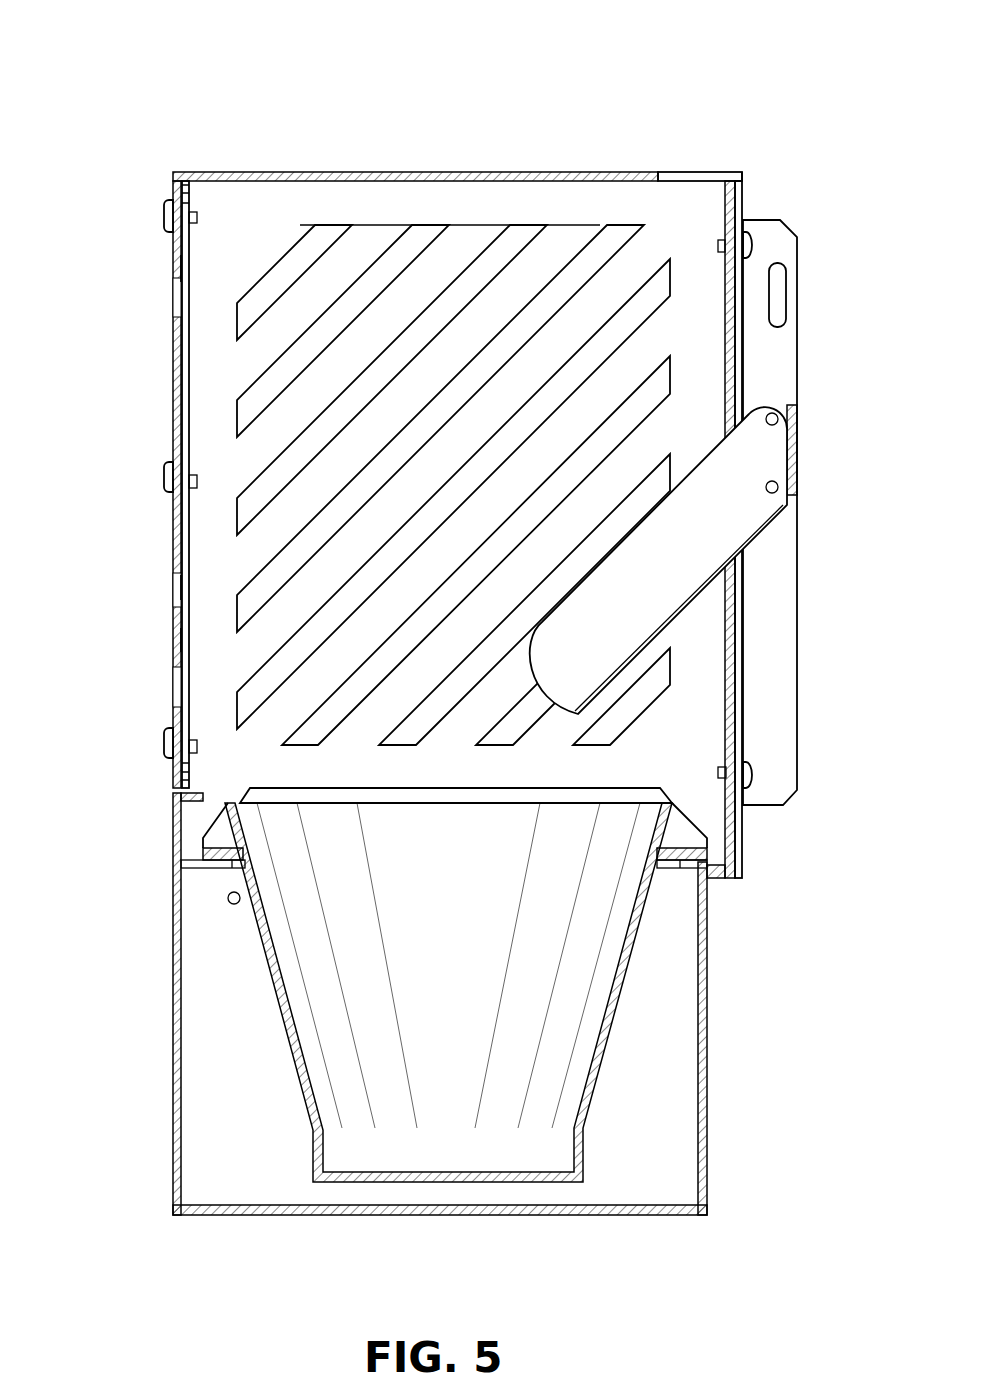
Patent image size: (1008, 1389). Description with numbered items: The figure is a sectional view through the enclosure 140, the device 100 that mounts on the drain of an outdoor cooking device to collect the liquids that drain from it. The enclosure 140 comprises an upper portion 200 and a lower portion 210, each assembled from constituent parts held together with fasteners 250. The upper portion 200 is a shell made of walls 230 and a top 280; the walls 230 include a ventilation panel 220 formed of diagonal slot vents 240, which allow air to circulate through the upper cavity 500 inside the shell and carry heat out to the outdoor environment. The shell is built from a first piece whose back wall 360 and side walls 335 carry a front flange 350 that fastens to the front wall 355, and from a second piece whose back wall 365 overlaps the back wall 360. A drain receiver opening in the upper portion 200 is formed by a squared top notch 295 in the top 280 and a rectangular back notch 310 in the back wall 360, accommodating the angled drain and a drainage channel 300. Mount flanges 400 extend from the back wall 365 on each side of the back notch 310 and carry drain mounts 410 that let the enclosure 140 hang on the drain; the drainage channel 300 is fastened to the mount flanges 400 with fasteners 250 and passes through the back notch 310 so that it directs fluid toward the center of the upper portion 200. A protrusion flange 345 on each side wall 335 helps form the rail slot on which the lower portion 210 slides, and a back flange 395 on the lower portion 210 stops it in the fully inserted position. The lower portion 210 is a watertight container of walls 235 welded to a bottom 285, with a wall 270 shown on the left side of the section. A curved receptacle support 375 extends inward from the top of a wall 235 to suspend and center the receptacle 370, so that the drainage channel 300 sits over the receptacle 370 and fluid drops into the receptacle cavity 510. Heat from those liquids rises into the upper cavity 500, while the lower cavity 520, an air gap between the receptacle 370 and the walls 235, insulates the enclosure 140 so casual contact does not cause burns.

The apparatus 100 is at (127, 36).
The enclosure 140 is at (124, 104).
The upper portion 200 is at (415, 106).
The lower portion 210 is at (281, 1281).
The ventilation panel 220 is at (181, 640).
The walls 230 is at (181, 268).
The walls 235 is at (707, 1025).
The vent 240 is at (181, 588).
The fasteners 250 is at (173, 218).
The lower housing left wall 270 is at (181, 970).
The top 280 is at (345, 172).
The bottom 285 is at (540, 1215).
The top notch 295 is at (712, 172).
The drainage channel 300 is at (766, 543).
The back notch 310 is at (725, 354).
The side walls 335 is at (264, 248).
The protrusion flange 345 is at (203, 852).
The front flange 350 is at (190, 350).
The front wall 355 is at (181, 345).
The back wall 360 is at (725, 756).
The back wall 365 is at (744, 194).
The receptacle 370 is at (275, 1022).
The receptacle support 375 is at (678, 873).
The back flange 395 is at (718, 858).
The mount flanges 400 is at (820, 499).
The drain mounts 410 is at (787, 293).
The upper cavity 500 is at (545, 212).
The receptacle cavity 510 is at (475, 848).
The lower cavity 520 is at (290, 1182).